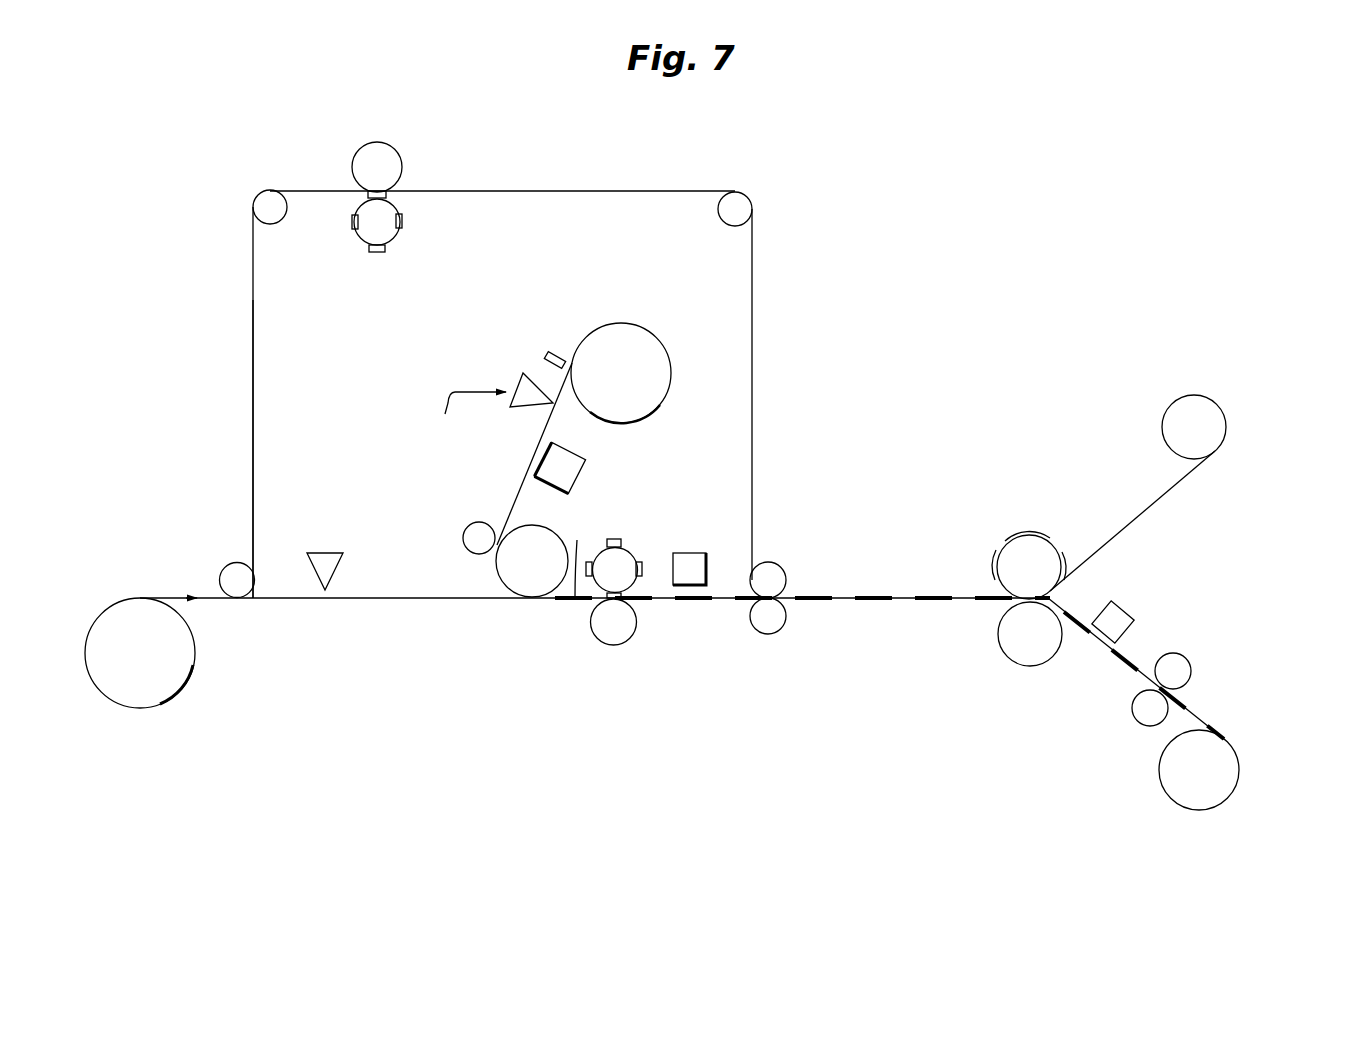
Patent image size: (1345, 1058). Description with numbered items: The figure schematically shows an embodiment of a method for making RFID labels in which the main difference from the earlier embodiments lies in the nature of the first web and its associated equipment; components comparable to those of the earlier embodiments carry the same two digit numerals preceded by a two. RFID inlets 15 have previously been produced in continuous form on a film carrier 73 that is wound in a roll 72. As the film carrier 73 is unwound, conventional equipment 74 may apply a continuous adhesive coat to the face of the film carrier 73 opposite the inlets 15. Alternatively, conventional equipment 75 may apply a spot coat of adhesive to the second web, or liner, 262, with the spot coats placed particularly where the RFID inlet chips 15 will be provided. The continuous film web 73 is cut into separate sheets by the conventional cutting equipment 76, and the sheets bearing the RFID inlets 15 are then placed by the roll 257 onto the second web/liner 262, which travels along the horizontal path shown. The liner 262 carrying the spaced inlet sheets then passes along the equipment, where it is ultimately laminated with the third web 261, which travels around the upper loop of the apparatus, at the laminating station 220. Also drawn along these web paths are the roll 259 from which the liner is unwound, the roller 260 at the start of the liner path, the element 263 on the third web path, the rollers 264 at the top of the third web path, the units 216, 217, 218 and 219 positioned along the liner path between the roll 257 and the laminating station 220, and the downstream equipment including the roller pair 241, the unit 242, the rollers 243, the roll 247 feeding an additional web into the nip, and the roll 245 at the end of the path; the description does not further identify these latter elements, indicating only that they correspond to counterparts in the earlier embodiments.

The RFID inlets 15 is at (583, 557).
The roll 72 is at (645, 325).
The film carrier 73 is at (551, 424).
The continuous adhesive coating equipment 74 is at (490, 406).
The spot coat adhesive coating equipment 75 is at (327, 521).
The cutting equipment 76 is at (479, 520).
The unit 216 is at (610, 460).
The element 217 is at (548, 347).
The roller pair 218 is at (605, 645).
The unit 219 is at (704, 536).
The laminating station 220 is at (797, 556).
The roller pair 241 is at (1048, 518).
The unit 242 is at (1148, 599).
The roller pair 243 is at (1203, 667).
The take-up roll 245 is at (1240, 775).
The supply roll 247 is at (1197, 394).
The roll 257 is at (540, 534).
The supply roll 259 is at (178, 670).
The roller 260 is at (205, 596).
The third web 261 is at (253, 290).
The second web 262 is at (392, 600).
The belt segment 263 is at (253, 345).
The roller pair 264 is at (353, 125).